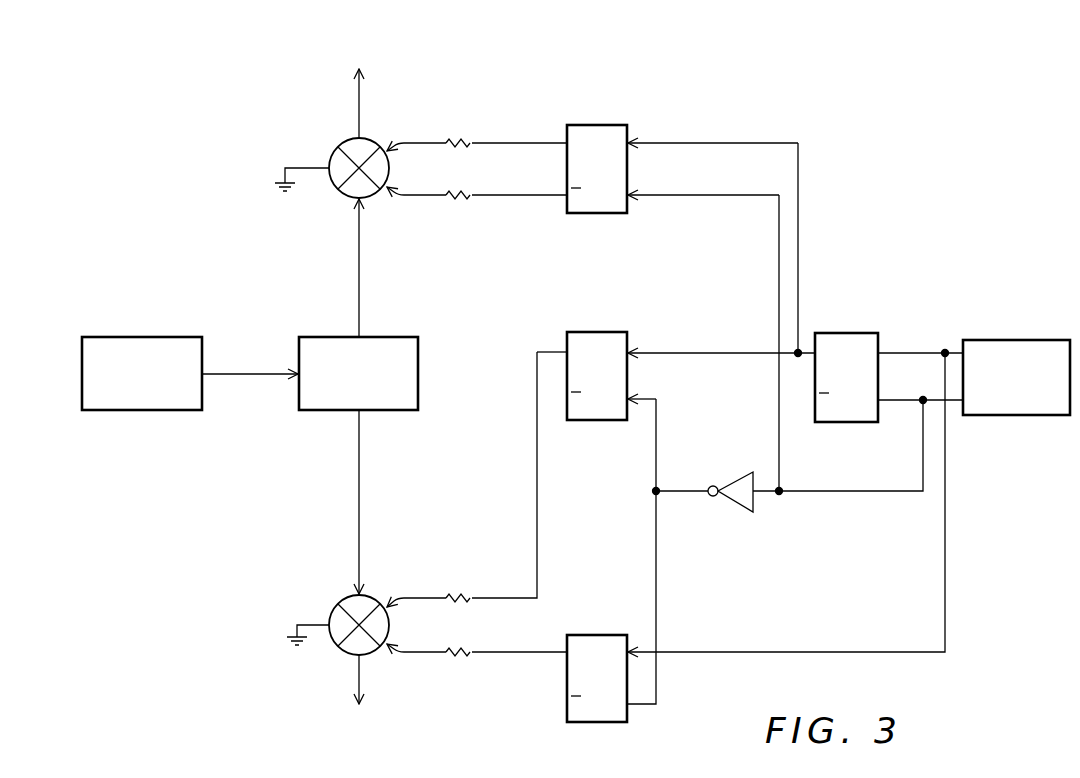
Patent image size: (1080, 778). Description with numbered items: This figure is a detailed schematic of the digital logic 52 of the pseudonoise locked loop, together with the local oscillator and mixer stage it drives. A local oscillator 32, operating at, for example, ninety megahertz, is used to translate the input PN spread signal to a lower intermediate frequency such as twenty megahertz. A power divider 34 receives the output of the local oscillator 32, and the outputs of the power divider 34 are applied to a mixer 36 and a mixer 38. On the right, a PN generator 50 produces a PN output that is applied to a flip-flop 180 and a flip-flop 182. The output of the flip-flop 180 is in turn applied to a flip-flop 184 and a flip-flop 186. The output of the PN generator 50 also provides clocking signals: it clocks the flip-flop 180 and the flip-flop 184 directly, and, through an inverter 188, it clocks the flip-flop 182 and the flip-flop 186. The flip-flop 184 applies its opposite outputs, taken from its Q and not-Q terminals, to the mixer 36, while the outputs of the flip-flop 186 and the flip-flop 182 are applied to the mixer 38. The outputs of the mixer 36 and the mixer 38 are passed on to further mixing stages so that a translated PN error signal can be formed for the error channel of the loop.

The local oscillator 32 is at (178, 346).
The power divider 34 is at (407, 358).
The mixer 36 is at (350, 145).
The mixer 38 is at (360, 606).
The PN generator 50 is at (1040, 348).
The digital logic 52 is at (583, 81).
The flip-flop 180 is at (846, 345).
The flip-flop 182 is at (598, 650).
The flip-flop 184 is at (590, 138).
The flip-flop 186 is at (598, 343).
The inverter 188 is at (737, 485).